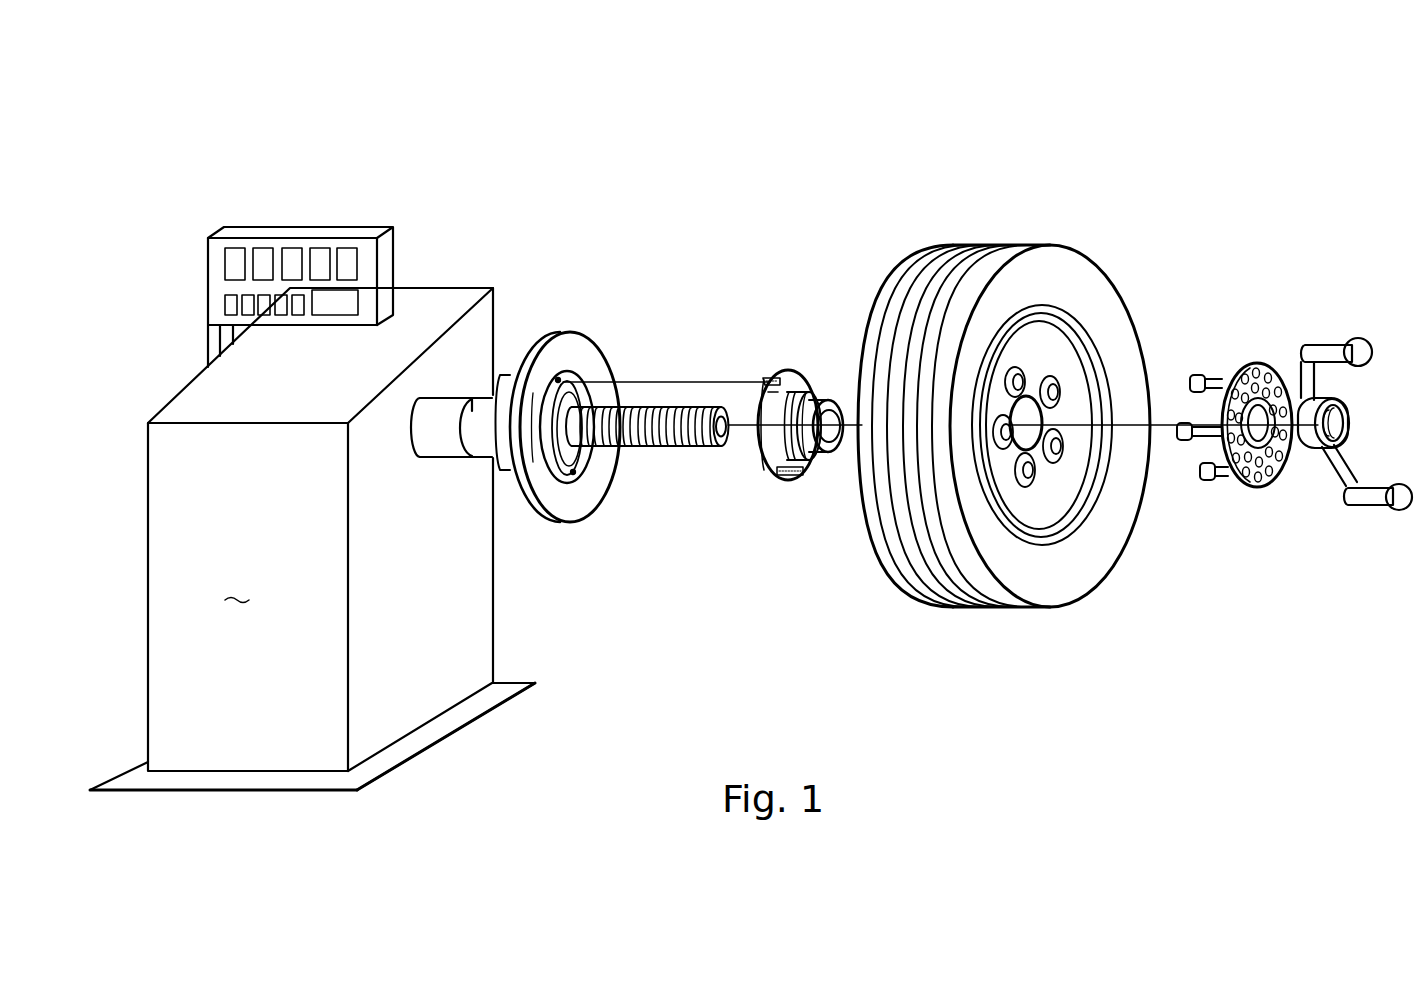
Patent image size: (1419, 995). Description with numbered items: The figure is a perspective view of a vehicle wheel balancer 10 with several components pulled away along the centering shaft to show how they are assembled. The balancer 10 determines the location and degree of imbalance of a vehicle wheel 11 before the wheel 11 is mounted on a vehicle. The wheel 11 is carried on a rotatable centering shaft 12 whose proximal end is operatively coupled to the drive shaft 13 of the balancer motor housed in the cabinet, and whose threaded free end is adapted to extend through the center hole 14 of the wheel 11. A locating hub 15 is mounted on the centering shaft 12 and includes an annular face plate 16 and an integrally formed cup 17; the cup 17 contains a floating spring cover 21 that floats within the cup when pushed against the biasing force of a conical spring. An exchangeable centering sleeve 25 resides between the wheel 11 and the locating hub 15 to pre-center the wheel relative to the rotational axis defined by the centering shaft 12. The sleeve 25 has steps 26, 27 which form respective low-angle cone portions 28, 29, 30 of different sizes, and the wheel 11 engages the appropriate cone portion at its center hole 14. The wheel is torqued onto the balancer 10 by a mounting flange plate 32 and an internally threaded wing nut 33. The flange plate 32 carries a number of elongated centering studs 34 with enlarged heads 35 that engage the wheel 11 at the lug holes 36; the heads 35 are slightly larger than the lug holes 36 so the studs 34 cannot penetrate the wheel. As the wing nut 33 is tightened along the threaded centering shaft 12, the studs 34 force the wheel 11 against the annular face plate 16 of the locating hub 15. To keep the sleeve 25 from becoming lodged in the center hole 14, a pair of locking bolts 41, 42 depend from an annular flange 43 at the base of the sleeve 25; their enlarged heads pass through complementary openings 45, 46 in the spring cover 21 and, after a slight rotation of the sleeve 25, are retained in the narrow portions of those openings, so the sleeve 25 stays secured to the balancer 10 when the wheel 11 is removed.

The vehicle wheel balancer 10 is at (410, 186).
The vehicle wheel 11 is at (1005, 245).
The centering shaft 12 is at (674, 440).
The drive shaft 13 is at (445, 400).
The center hole 14 is at (1040, 445).
The locating hub 15 is at (572, 333).
The annular face plate 16 is at (586, 362).
The cup 17 is at (500, 470).
The floating spring cover 21 is at (572, 490).
The exchangeable centering sleeve 25 is at (820, 397).
The step 26 is at (820, 462).
The step 27 is at (778, 468).
The low-angle cone portion 28 is at (838, 392).
The low-angle cone portion 29 is at (799, 382).
The low-angle cone portion 30 is at (762, 447).
The mounting flange plate 32 is at (1243, 362).
The wing nut 33 is at (1335, 340).
The centering studs 34 is at (1215, 373).
The enlarged heads 35 is at (1204, 480).
The lug holes 36 is at (1052, 388).
The locking bolt 41 is at (768, 377).
The locking bolt 42 is at (793, 478).
The annular flange 43 is at (762, 395).
The opening 45 is at (553, 376).
The opening 46 is at (576, 478).